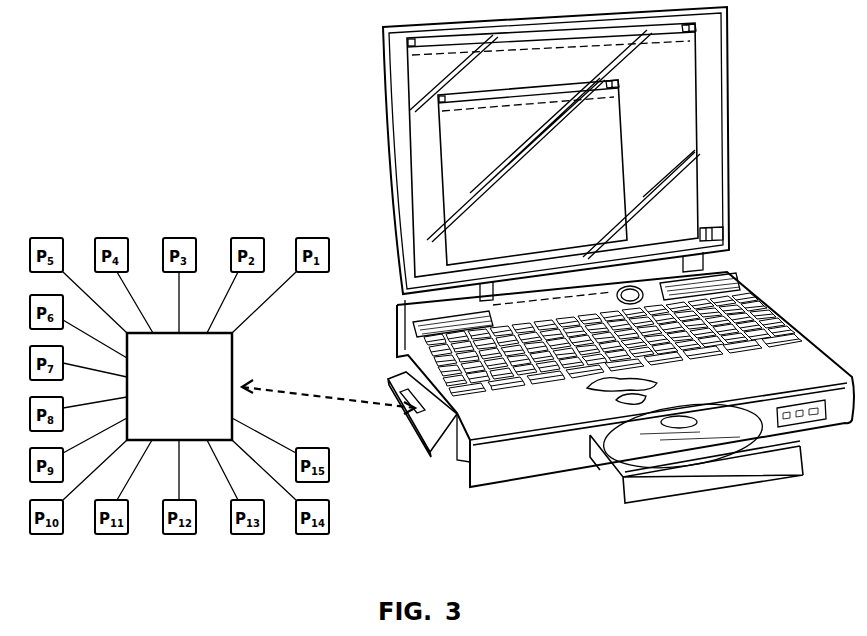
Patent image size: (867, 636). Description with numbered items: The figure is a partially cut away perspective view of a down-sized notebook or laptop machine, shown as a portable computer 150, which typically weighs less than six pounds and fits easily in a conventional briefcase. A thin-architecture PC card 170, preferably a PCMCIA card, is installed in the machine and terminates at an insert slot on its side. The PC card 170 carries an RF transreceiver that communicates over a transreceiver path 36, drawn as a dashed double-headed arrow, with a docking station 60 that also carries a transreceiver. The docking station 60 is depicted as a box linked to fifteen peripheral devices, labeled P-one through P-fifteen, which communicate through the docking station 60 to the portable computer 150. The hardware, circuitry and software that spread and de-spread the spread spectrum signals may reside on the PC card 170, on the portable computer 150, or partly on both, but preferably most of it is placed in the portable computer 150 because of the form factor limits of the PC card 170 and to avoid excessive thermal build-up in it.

The transreceiver path 36 is at (310, 393).
The docking station 60 is at (179, 386).
The portable computer 150 is at (397, 165).
The PC card 170 is at (447, 418).